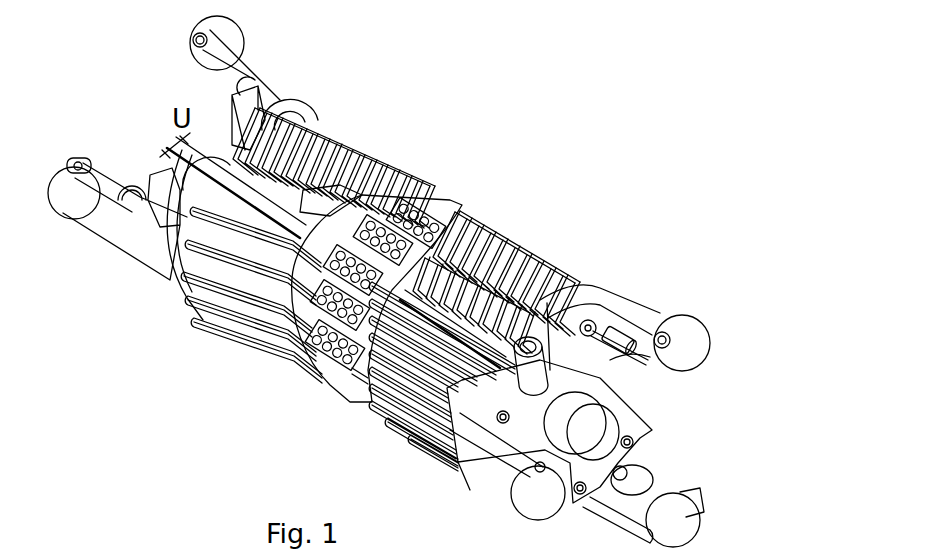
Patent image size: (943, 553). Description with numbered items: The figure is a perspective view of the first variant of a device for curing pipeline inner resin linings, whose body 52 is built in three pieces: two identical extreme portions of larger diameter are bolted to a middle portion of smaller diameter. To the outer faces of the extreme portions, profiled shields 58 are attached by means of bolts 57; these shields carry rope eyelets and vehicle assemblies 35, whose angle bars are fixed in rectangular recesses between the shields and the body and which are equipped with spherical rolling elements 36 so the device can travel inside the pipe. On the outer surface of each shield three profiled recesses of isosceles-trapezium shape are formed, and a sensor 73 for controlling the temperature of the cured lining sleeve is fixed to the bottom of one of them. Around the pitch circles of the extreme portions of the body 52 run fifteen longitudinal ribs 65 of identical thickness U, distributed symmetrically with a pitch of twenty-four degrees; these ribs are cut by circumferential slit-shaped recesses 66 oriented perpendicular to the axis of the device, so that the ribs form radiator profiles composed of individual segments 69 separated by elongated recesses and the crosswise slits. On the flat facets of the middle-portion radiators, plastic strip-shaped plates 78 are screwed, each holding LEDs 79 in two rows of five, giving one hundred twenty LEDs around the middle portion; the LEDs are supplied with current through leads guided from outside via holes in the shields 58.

The vehicle assembly 35 is at (117, 240).
The spherical rolling element 36 is at (65, 190).
The body 52 is at (443, 300).
The bolt 57 is at (633, 440).
The profiled shield 58 is at (262, 95).
The longitudinal rib 65 is at (372, 150).
The circumferential slit-shaped recess 66 is at (290, 353).
The segment 69 is at (460, 235).
The sensor 73 is at (530, 345).
The plastic strip-shaped plate 78 is at (333, 367).
The LED 79 is at (360, 377).